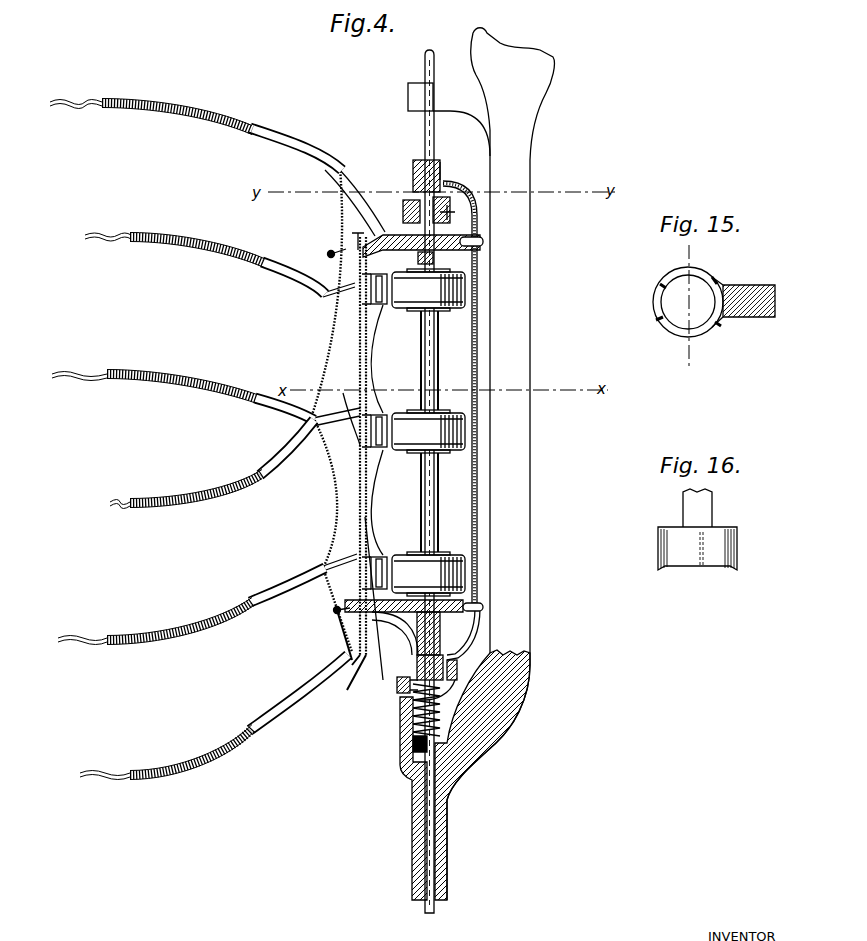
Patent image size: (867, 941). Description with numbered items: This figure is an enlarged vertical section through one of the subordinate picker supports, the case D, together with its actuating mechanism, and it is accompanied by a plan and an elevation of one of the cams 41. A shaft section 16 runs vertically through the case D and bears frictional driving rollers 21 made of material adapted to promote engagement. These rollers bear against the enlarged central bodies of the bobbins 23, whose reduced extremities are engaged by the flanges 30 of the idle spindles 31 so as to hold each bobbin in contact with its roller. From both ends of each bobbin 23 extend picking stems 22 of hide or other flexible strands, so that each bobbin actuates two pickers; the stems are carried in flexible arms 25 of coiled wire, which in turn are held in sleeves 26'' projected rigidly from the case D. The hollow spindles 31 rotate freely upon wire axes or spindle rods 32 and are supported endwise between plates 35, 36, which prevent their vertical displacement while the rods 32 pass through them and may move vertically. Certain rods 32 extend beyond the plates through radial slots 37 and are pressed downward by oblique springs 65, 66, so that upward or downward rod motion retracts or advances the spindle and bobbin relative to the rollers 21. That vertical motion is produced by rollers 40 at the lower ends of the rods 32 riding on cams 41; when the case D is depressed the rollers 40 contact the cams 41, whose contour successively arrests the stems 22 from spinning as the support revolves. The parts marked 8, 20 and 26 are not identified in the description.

In FIG. 4, the stand or support standard 8 is at (518, 317).
In FIG. 15, the stand or support standard 8 is at (775, 300).
In FIG. 16, the stand or support standard 8 is at (703, 502).
In FIG. 4, the shaft section 16 is at (436, 375).
In FIG. 4, the hub collar 20 is at (441, 176).
In FIG. 4, the frictional driving rollers 21 is at (440, 308).
In FIG. 4, the picking stems 22 is at (108, 244).
In FIG. 4, the bobbins 23 is at (386, 306).
In FIG. 4, the flexible arms 25 is at (172, 248).
In FIG. 4, the spring 26 is at (438, 716).
In FIG. 4, the sleeves 26'' is at (225, 439).
In FIG. 4, the flanges of the idle spindles 30 is at (355, 302).
In FIG. 4, the idle spindles 31 is at (351, 463).
In FIG. 4, the spindle rods 32 is at (362, 502).
In FIG. 4, the upper plate 35 is at (412, 236).
In FIG. 4, the lower plate 36 is at (336, 612).
In FIG. 4, the radial slots 37 is at (398, 431).
In FIG. 4, the rollers 40 is at (398, 692).
In FIG. 4, the cams 41 is at (400, 720).
In FIG. 15, the cams 41 is at (673, 330).
In FIG. 16, the cams 41 is at (673, 525).
In FIG. 4, the oblique spring 65 is at (395, 212).
In FIG. 4, the oblique spring 66 is at (410, 660).
In FIG. 4, the case or support D is at (320, 410).